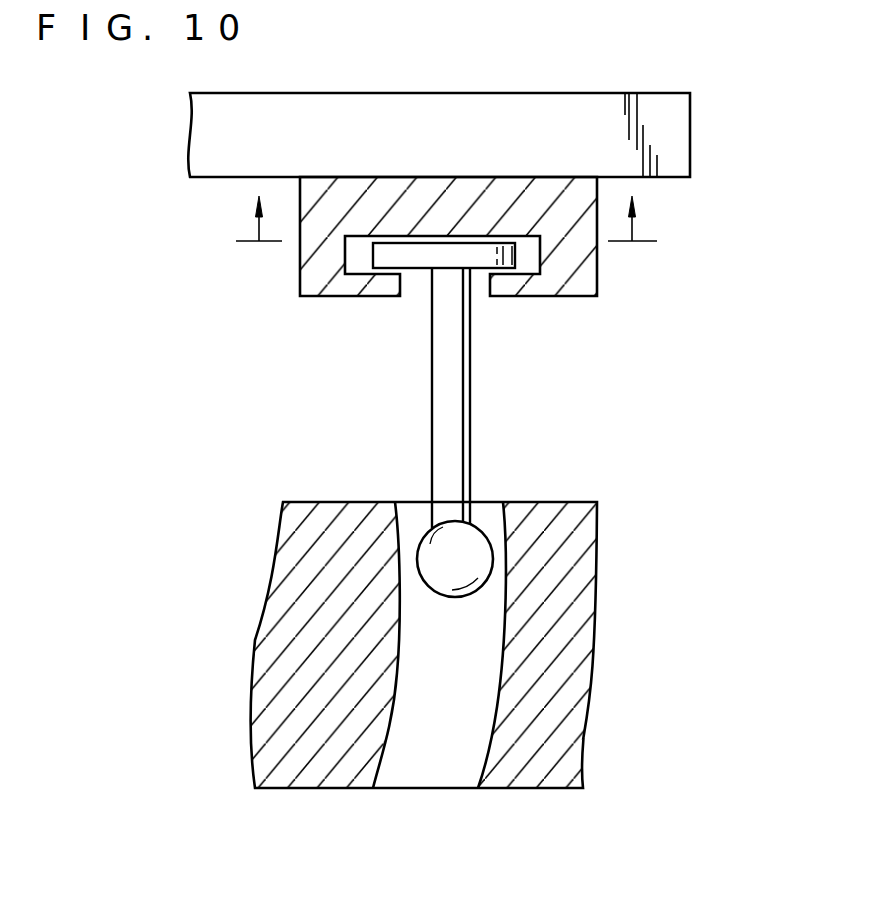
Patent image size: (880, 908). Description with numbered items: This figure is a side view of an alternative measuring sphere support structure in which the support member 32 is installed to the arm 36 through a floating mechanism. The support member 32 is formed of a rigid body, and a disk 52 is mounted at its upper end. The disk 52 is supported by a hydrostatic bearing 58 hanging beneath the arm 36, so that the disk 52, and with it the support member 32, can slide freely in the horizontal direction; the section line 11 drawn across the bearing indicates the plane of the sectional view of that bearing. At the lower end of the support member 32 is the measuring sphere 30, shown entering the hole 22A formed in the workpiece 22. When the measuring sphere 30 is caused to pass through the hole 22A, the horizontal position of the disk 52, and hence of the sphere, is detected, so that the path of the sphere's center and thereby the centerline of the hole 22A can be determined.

The section line 11 is at (444, 213).
The workpiece 22 is at (325, 502).
The hole 22A is at (400, 520).
The measuring sphere 30 is at (483, 530).
The support member 32 is at (470, 418).
The arm 36 is at (680, 113).
The disk 52 is at (413, 260).
The hydrostatic bearing 58 is at (578, 273).